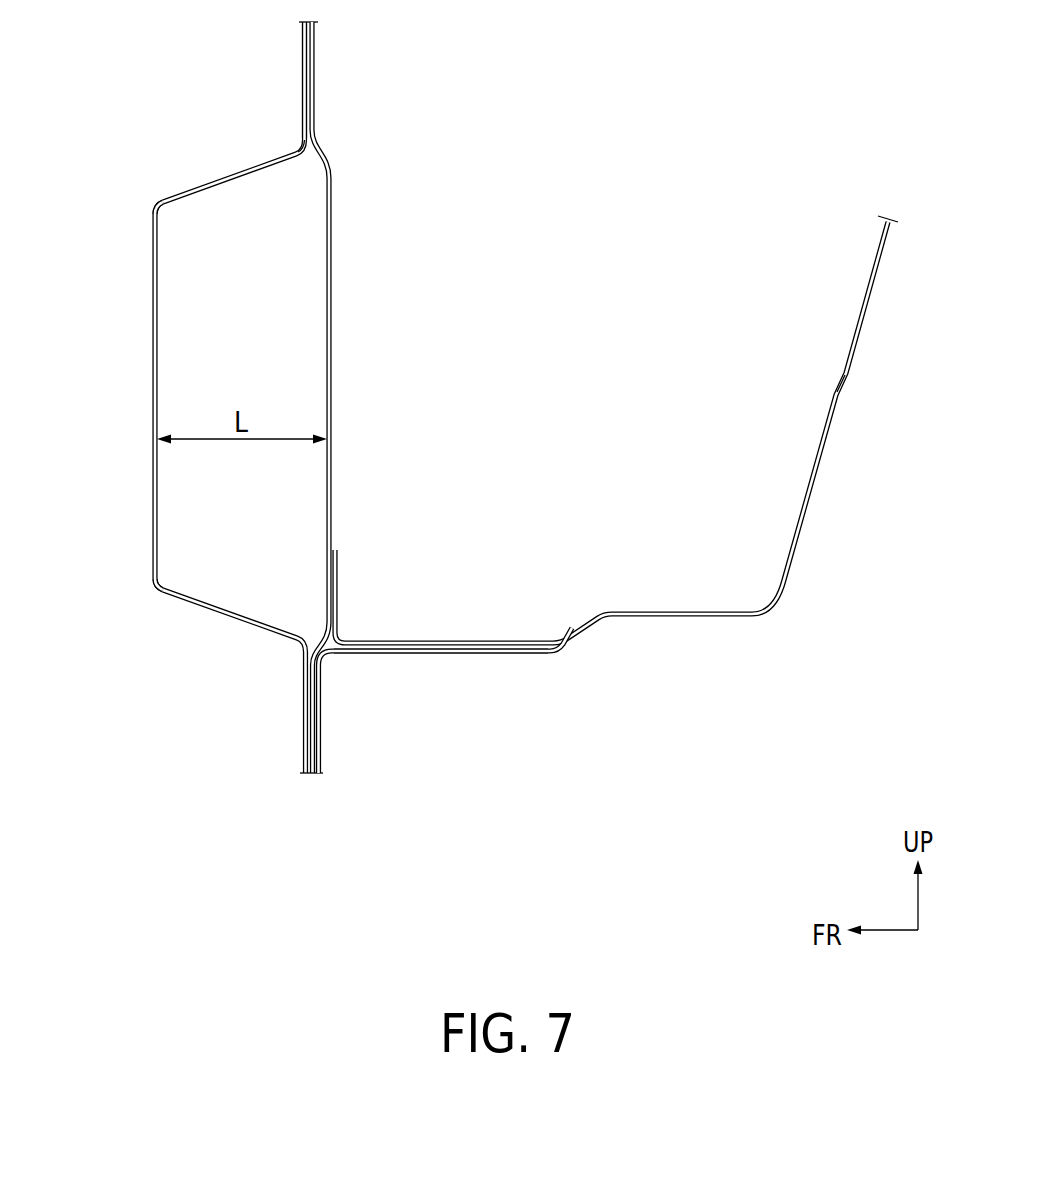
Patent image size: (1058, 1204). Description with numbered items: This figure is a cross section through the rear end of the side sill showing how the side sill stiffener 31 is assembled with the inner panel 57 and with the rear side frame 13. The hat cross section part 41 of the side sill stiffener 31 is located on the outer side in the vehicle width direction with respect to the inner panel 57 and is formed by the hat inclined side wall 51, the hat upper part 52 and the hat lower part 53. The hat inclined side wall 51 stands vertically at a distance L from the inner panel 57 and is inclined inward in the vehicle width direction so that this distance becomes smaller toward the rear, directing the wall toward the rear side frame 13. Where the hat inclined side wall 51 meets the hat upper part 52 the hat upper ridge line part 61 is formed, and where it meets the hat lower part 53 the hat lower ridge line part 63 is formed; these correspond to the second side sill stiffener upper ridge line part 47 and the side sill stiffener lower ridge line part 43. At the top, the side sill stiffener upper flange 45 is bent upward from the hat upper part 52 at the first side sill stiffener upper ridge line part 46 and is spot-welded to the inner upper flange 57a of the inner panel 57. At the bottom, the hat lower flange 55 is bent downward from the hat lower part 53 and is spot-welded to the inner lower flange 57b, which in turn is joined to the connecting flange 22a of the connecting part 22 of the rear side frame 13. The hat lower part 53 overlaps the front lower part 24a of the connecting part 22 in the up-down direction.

The rear side frame 13 is at (872, 345).
The connecting part 22 is at (608, 484).
The connecting flange 22a is at (318, 696).
The front lower part 24a is at (529, 660).
The side sill stiffener 31 is at (220, 397).
The hat cross section part 41 is at (175, 395).
The side sill stiffener lower ridge line part 43 is at (154, 592).
The side sill stiffener upper flange 45 is at (303, 52).
The first side sill stiffener upper ridge line part 46 is at (303, 149).
The second side sill stiffener upper ridge line part 47 is at (155, 205).
The hat inclined side wall 51 is at (152, 489).
The hat upper part 52 is at (237, 172).
The hat lower part 53 is at (227, 617).
The hat lower flange 55 is at (304, 714).
The inner panel 57 is at (351, 442).
The inner upper flange 57a is at (316, 78).
The inner lower flange 57b is at (315, 758).
The hat upper ridge line part 61 is at (158, 209).
The hat lower ridge line part 63 is at (158, 584).